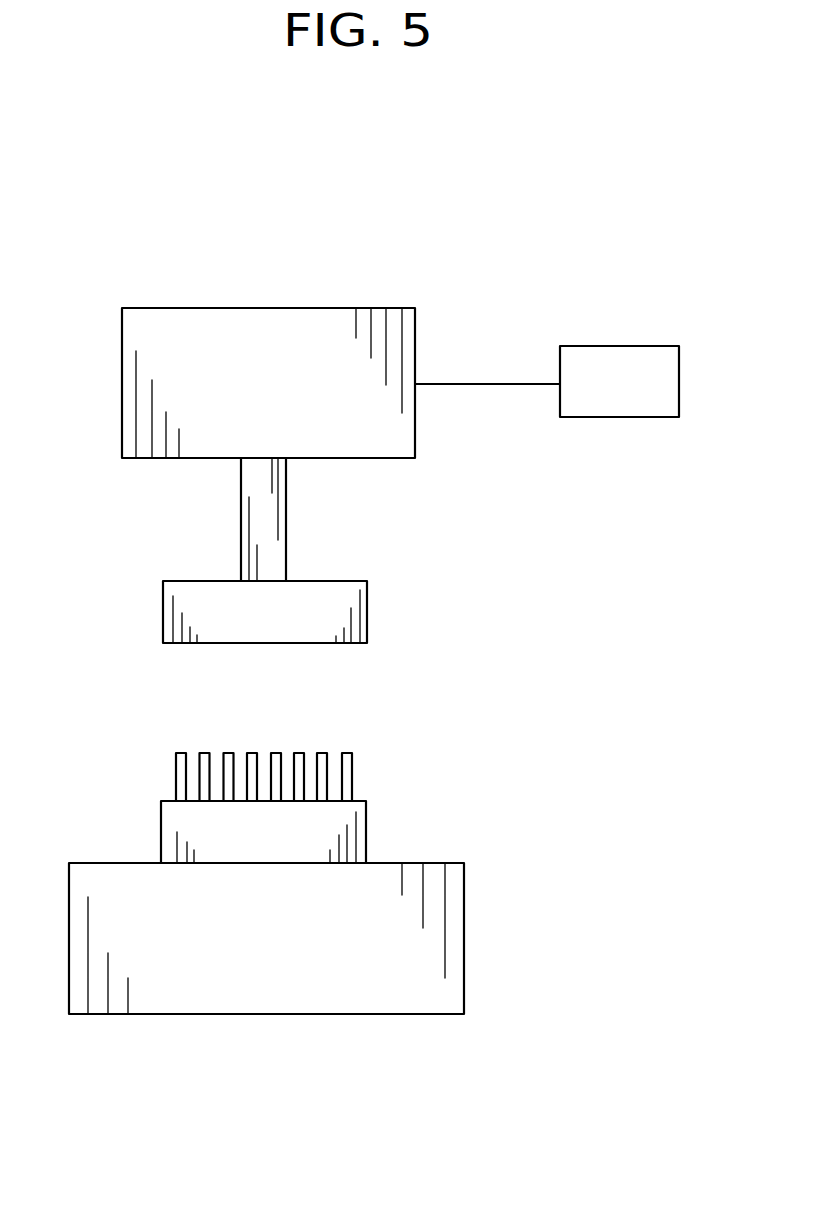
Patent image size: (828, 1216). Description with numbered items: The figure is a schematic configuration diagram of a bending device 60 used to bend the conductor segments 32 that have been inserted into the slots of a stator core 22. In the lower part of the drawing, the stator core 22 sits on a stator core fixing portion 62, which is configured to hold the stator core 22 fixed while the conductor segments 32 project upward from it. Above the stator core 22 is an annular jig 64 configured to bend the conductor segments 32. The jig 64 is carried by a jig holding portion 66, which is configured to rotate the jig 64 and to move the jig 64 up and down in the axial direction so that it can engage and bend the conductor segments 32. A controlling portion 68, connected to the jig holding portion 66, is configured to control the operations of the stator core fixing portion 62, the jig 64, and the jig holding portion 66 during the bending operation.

The bending device 60 is at (118, 230).
The jig holding portion 66 is at (317, 327).
The controlling portion 68 is at (616, 362).
The annular jig 64 is at (354, 613).
The conductor segments 32 is at (352, 768).
The stator core 22 is at (350, 832).
The stator core fixing portion 62 is at (437, 957).